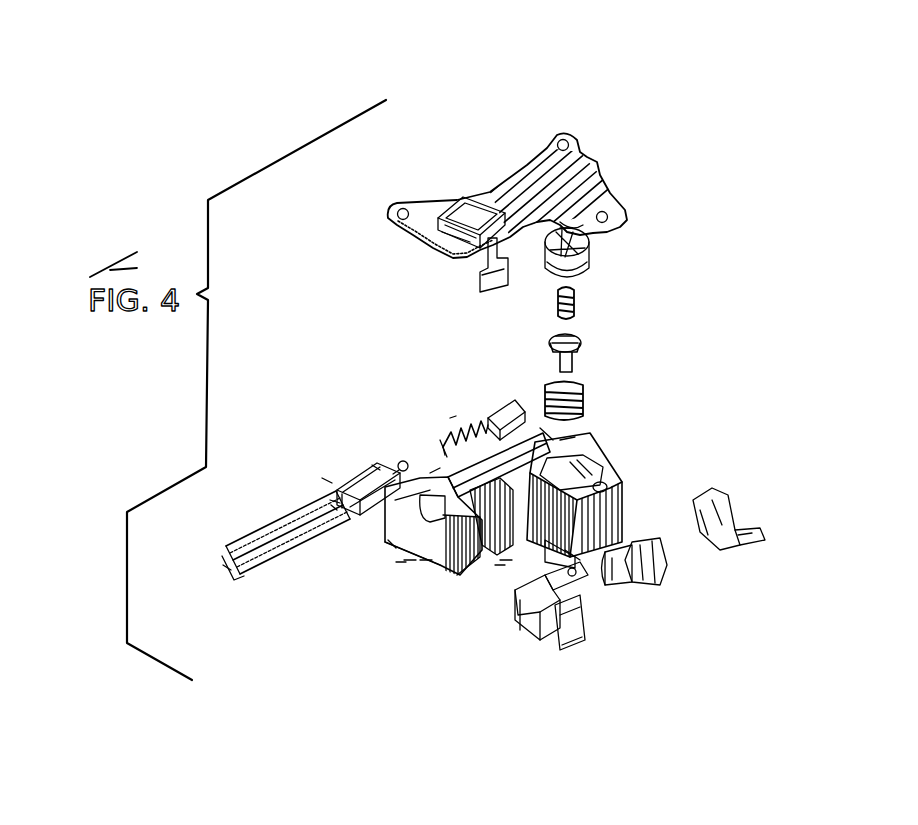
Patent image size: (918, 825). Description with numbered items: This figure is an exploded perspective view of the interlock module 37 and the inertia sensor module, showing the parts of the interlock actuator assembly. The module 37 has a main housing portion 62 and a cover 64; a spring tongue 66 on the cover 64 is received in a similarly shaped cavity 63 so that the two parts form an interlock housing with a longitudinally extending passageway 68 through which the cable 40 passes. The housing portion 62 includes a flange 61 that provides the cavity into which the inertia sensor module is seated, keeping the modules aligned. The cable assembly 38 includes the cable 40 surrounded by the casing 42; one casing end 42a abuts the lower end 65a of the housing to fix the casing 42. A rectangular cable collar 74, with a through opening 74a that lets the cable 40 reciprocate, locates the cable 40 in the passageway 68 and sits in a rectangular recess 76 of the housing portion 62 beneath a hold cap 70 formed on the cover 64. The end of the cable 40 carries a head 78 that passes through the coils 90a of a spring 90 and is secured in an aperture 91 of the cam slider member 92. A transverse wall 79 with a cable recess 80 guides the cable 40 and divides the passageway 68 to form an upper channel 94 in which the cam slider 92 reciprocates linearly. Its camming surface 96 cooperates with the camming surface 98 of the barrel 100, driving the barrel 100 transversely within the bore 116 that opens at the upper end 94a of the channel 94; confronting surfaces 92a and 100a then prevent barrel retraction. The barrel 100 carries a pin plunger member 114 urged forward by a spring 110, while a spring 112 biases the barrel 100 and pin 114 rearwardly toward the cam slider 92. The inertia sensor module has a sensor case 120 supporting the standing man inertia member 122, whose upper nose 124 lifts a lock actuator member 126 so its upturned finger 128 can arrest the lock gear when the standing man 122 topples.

The module 37 is at (662, 188).
The cable assembly 38 is at (258, 505).
The cable 40 is at (227, 567).
The casing 42 is at (270, 548).
The casing end 42a is at (334, 498).
The flange 61 is at (570, 550).
The main housing portion 62 is at (427, 560).
The cavity 63 is at (500, 565).
The cover 64 is at (513, 162).
The lower end of housing 65a is at (403, 562).
The spring tongue 66 is at (478, 283).
The passageway 68 is at (410, 560).
The hold cap 70 is at (462, 210).
The cable collar 74 is at (335, 482).
The through opening 74a is at (322, 478).
The rectangular recess 76 is at (393, 540).
The head 78 is at (377, 467).
The transverse wall 79 is at (507, 560).
The cable recess 80 is at (420, 456).
The spring 90 is at (430, 440).
The coils 90a is at (453, 417).
The aperture 91 is at (447, 423).
The cam slider member 92 is at (513, 400).
The front surface of cam slider 92a is at (430, 473).
The upper chamber or channel 94 is at (610, 482).
The upper end of channel 94a is at (560, 440).
The camming surface 96 is at (540, 428).
The camming surface 98 is at (567, 228).
The barrel 100 is at (593, 268).
The rear surface of barrel 100a is at (590, 236).
The spring 110 is at (585, 300).
The spring 112 is at (593, 396).
The pin plunger member 114 is at (580, 344).
The transverse passage or bore 116 is at (600, 428).
The sensor case 120 is at (533, 637).
The standing man inertia member 122 is at (655, 575).
The upper nose 124 is at (673, 555).
The lock actuator member 126 is at (712, 488).
The upturned finger 128 is at (740, 545).